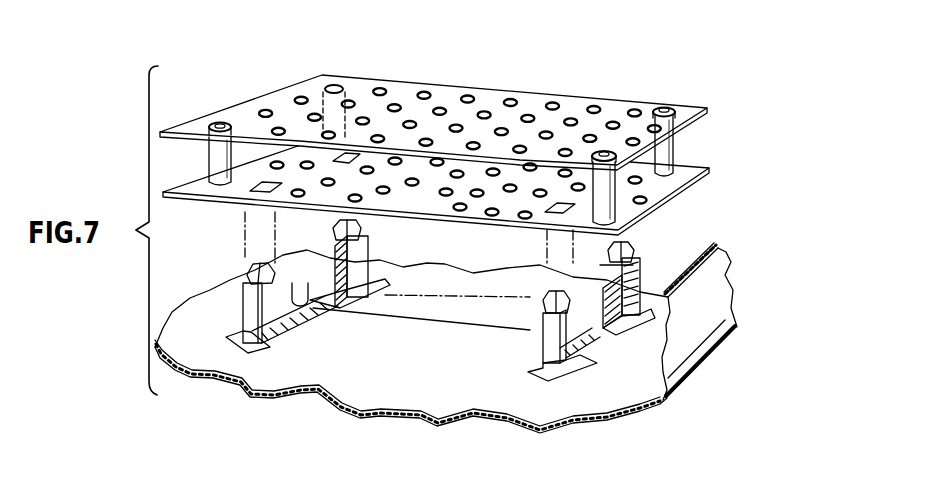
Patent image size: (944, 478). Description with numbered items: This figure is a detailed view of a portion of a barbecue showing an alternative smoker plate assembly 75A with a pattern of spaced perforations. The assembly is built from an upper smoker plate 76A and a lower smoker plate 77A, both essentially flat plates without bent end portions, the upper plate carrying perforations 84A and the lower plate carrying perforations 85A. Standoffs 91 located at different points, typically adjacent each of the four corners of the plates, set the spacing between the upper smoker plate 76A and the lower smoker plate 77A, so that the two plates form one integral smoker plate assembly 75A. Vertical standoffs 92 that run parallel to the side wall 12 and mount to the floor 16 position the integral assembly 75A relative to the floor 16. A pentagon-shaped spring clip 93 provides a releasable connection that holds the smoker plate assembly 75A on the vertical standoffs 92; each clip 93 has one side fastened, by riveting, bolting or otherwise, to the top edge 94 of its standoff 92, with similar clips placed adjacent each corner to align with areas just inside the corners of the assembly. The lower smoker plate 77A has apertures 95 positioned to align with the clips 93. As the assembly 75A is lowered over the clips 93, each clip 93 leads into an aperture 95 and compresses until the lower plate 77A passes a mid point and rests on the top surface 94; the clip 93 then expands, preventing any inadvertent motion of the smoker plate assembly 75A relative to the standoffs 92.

The side wall 12 is at (728, 336).
The floor 16 is at (578, 398).
The smoker plate assembly 75A is at (434, 152).
The upper smoker plate 76A is at (399, 92).
The lower smoker plate 77A is at (201, 191).
The perforations of upper smoker plate 84A is at (471, 99).
The perforations of lower smoker plate 85A is at (406, 206).
The standoffs 91 is at (207, 163).
The vertical standoffs 92 is at (250, 303).
The spring clip 93 is at (632, 246).
The top edge 94 is at (637, 253).
The apertures 95 is at (258, 188).